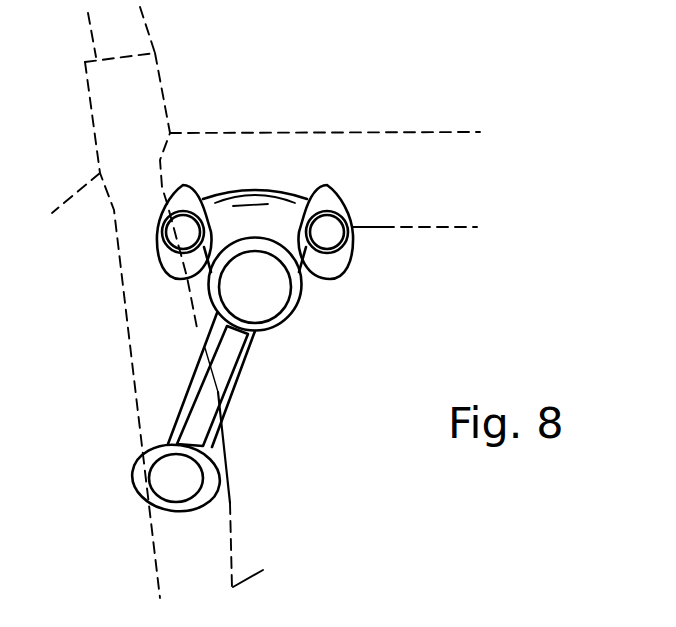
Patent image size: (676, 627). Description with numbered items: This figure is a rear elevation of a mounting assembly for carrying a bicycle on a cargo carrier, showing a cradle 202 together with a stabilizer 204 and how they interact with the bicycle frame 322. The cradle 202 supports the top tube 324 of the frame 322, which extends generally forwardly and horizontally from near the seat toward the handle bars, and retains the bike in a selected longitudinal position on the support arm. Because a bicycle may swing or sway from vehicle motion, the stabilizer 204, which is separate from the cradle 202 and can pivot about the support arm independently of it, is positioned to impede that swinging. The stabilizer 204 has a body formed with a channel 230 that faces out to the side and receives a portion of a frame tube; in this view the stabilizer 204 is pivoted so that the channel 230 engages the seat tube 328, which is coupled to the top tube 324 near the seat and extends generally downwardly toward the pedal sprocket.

The frame 322 is at (237, 57).
The top tube 324 is at (412, 133).
The cradle 202 is at (265, 183).
The stabilizer 204 is at (245, 364).
The channel 230 is at (227, 506).
The seat tube 328 is at (263, 570).